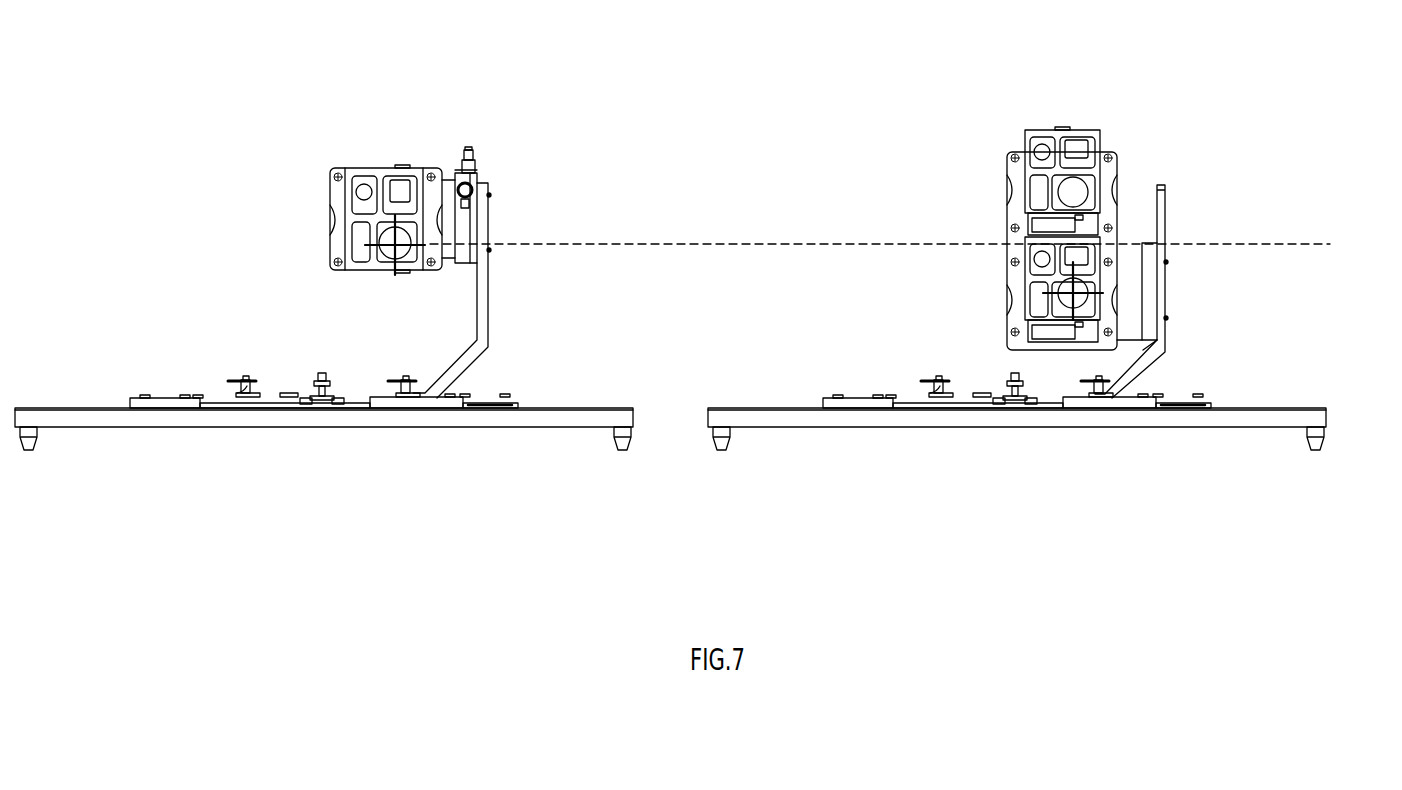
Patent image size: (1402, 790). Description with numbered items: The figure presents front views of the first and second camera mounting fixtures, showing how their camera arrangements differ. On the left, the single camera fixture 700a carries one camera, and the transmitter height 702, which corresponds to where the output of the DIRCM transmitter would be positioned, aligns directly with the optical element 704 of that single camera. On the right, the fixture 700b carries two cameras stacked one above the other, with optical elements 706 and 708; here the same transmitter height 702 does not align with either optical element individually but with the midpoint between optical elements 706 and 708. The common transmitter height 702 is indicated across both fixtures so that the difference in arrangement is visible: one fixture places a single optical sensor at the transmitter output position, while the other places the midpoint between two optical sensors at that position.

The single camera fixture 700a is at (268, 145).
The fixture 700b is at (940, 130).
The transmitter height 702 is at (1330, 244).
The optical element 704 is at (413, 237).
The optical element 706 is at (1085, 185).
The optical element 708 is at (1096, 280).